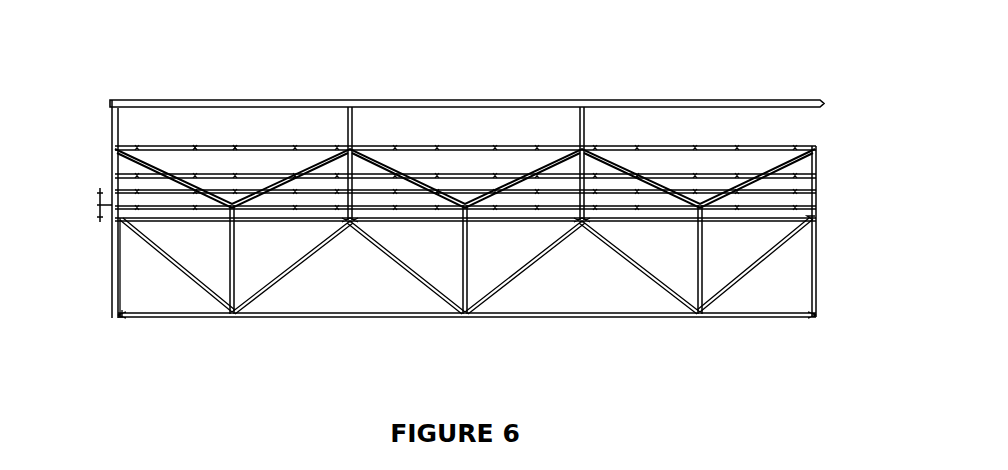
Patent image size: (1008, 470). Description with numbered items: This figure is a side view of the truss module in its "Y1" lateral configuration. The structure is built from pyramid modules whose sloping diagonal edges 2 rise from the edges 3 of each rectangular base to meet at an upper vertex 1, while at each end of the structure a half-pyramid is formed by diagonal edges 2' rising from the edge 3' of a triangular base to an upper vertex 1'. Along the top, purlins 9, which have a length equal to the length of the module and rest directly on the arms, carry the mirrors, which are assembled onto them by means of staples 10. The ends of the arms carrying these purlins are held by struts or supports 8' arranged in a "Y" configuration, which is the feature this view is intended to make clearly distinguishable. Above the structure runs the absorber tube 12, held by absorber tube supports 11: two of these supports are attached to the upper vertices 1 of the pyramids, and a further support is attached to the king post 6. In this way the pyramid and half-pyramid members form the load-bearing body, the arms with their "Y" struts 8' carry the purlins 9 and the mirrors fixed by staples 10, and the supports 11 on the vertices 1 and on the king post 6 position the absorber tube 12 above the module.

The upper vertex of the pyramid 1 is at (463, 295).
The upper vertex of the half-pyramid 1' is at (467, 294).
The diagonal edges of the pyramid 2 is at (466, 267).
The diagonal edges of the half-pyramid 2' is at (466, 265).
The edge of the rectangular base of the pyramid 3 is at (466, 343).
The edge of the triangular base of the half-pyramid 3' is at (467, 342).
The king post 6 is at (116, 250).
The struts or supports of the arms in "Y" configuration 8' is at (466, 289).
The purlins 9 is at (817, 219).
The staples 10 is at (236, 145).
The absorber tube support 11 is at (110, 106).
The absorber tube 12 is at (766, 100).